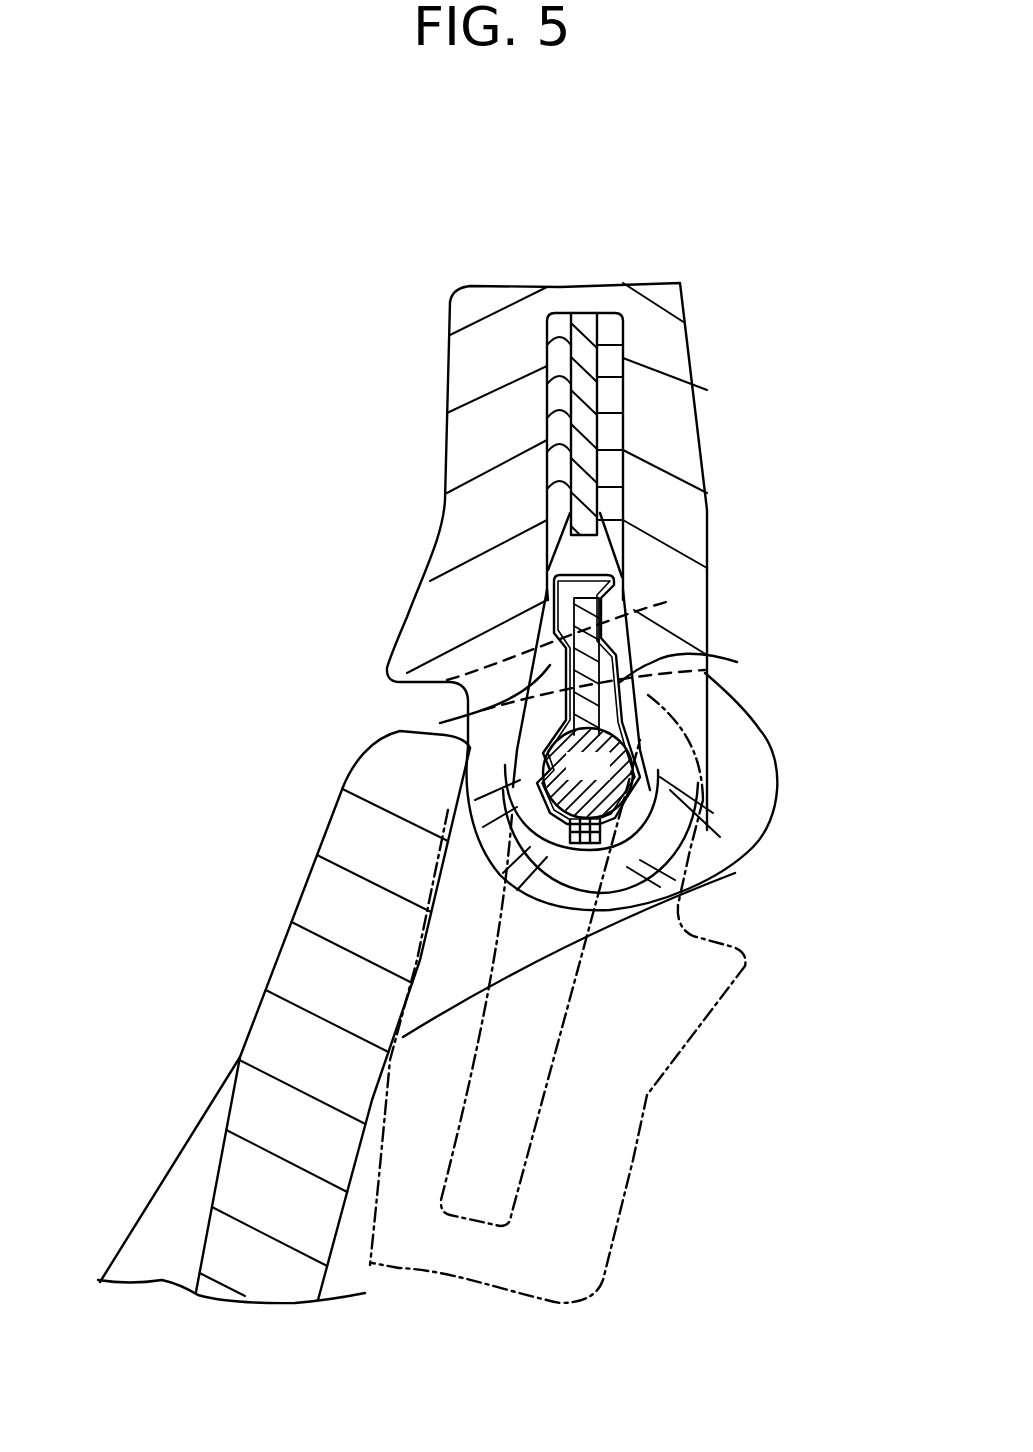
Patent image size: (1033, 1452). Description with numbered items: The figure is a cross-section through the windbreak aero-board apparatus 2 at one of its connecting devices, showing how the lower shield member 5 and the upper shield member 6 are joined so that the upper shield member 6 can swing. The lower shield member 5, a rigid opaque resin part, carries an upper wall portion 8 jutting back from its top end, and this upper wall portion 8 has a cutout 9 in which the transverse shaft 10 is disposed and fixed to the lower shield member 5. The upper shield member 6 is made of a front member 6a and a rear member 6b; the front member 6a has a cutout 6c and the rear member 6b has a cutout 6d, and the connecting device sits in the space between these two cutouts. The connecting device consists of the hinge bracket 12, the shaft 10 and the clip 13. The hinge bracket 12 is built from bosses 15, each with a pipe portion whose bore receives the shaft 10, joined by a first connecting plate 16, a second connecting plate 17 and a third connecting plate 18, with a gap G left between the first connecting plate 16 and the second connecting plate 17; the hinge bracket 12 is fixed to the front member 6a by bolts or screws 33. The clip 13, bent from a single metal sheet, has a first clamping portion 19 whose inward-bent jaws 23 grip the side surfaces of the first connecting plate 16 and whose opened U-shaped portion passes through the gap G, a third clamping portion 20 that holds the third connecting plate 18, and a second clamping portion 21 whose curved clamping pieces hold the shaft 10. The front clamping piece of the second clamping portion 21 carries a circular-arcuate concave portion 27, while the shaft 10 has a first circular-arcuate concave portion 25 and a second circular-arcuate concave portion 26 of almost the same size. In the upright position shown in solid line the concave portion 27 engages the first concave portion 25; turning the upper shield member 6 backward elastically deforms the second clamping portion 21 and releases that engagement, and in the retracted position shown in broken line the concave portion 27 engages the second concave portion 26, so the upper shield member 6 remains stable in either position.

The windbreak aero-board apparatus 2 is at (350, 623).
The lower shield member 5 is at (247, 1028).
The upper shield member 6 is at (683, 290).
The front member 6a is at (492, 290).
The rear member 6b is at (656, 287).
The cutout 6c is at (558, 310).
The cutout 6d is at (623, 362).
The upper wall portion 8 is at (757, 790).
The cutout 9 is at (443, 987).
The shaft 10 is at (607, 790).
The hinge bracket 12 is at (613, 413).
The clip 13 is at (737, 662).
The boss 15 is at (732, 828).
The first connecting plate 16 is at (575, 408).
The second connecting plate 17 is at (553, 600).
The third connecting plate 18 is at (598, 885).
The first clamping portion 19 is at (567, 548).
The third clamping portion 20 is at (617, 870).
The second clamping portion 21 is at (640, 743).
The jaws 23 is at (473, 703).
The first circular-arcuate concave portion 25 is at (545, 735).
The second circular-arcuate concave portion 26 is at (723, 858).
The circular-arcuate concave portion 27 is at (555, 850).
The bolts or screws 33 is at (617, 472).
The gap G is at (455, 500).